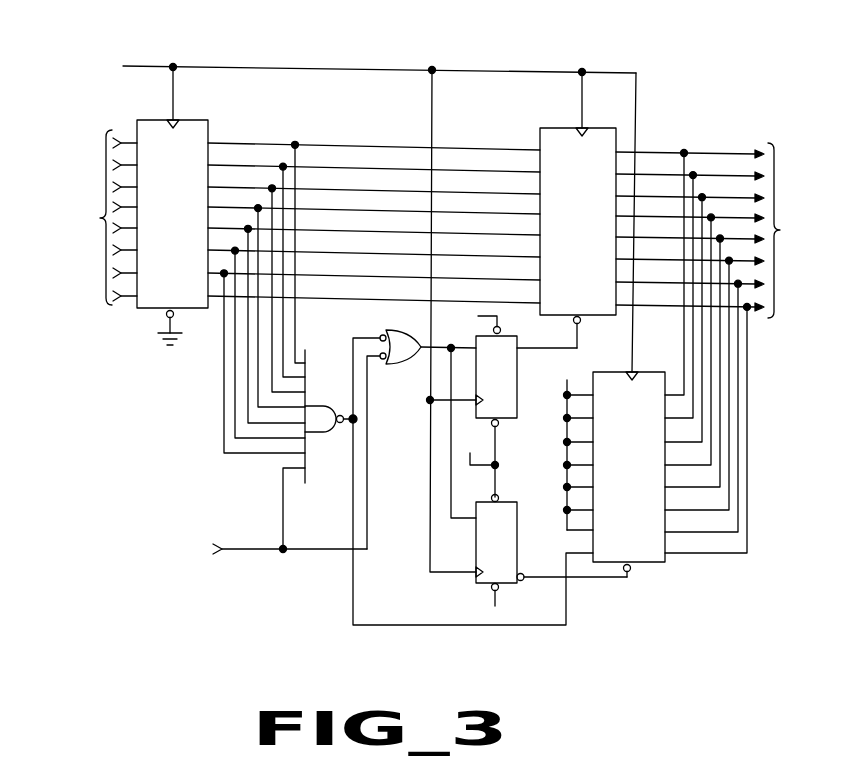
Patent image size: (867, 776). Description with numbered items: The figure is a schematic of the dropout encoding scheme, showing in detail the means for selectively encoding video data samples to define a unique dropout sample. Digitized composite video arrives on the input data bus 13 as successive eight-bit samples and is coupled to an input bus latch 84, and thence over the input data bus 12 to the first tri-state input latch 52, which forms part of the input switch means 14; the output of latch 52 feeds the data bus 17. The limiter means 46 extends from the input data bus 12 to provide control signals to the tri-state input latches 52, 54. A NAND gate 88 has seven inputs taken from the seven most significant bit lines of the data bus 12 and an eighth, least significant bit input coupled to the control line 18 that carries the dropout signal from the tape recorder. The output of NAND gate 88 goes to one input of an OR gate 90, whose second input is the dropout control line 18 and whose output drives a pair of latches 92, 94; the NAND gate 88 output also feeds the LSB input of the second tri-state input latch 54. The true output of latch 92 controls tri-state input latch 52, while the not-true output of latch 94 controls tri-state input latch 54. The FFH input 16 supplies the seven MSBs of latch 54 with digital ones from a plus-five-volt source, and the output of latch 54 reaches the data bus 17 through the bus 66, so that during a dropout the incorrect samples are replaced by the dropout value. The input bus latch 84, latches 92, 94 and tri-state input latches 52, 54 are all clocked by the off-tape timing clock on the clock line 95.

The clock line 95 is at (150, 65).
The input data bus 13 is at (95, 217).
The input bus latch 84 is at (145, 310).
The input data bus 12 is at (482, 204).
The data bus 17 is at (787, 230).
The first tri-state input latch 52 is at (544, 128).
The NAND gate 88 is at (309, 352).
The OR gate 90 is at (412, 364).
The limiter means 46 is at (381, 452).
The control line 18 is at (240, 548).
The latch 92 is at (512, 418).
The latch 94 is at (506, 500).
The second tri-state input latch 54 is at (657, 562).
The FFH input 16 is at (565, 500).
The input switch means 14 is at (612, 328).
The bus 66 is at (752, 350).